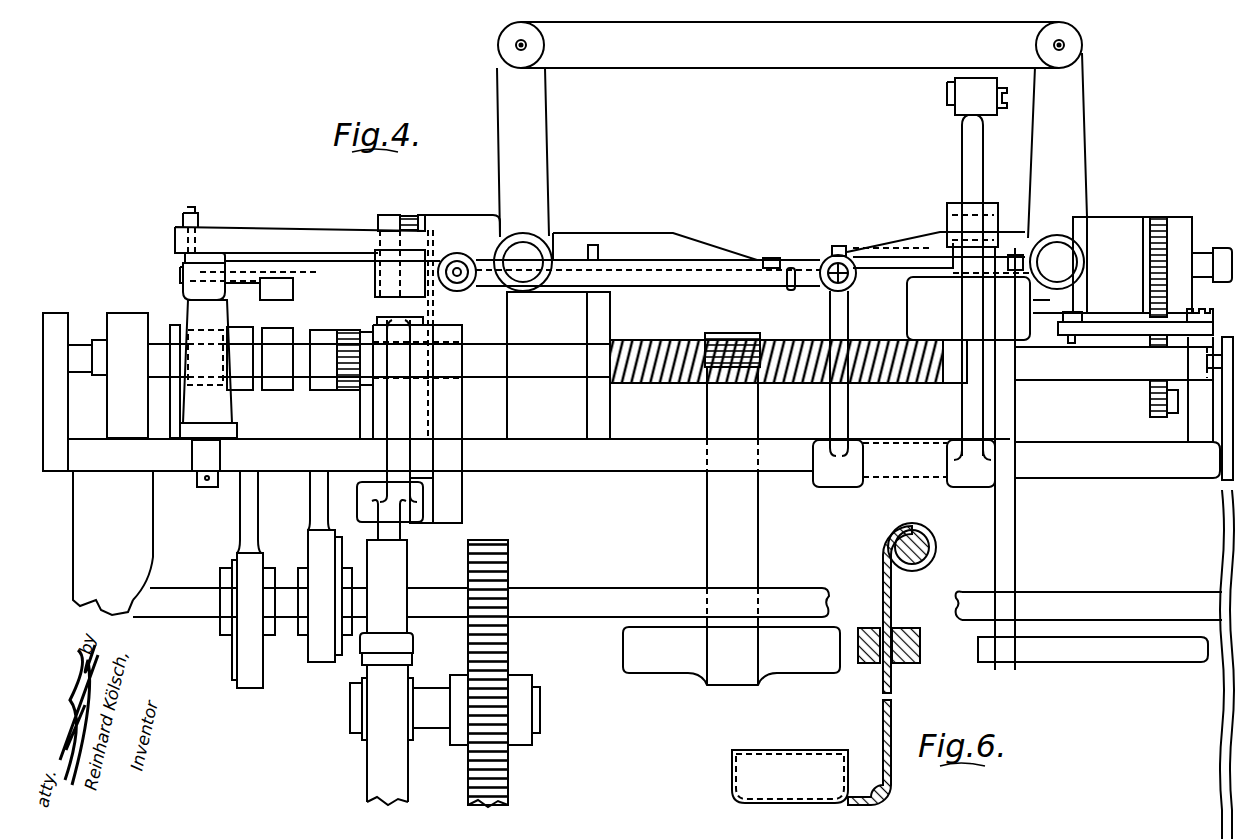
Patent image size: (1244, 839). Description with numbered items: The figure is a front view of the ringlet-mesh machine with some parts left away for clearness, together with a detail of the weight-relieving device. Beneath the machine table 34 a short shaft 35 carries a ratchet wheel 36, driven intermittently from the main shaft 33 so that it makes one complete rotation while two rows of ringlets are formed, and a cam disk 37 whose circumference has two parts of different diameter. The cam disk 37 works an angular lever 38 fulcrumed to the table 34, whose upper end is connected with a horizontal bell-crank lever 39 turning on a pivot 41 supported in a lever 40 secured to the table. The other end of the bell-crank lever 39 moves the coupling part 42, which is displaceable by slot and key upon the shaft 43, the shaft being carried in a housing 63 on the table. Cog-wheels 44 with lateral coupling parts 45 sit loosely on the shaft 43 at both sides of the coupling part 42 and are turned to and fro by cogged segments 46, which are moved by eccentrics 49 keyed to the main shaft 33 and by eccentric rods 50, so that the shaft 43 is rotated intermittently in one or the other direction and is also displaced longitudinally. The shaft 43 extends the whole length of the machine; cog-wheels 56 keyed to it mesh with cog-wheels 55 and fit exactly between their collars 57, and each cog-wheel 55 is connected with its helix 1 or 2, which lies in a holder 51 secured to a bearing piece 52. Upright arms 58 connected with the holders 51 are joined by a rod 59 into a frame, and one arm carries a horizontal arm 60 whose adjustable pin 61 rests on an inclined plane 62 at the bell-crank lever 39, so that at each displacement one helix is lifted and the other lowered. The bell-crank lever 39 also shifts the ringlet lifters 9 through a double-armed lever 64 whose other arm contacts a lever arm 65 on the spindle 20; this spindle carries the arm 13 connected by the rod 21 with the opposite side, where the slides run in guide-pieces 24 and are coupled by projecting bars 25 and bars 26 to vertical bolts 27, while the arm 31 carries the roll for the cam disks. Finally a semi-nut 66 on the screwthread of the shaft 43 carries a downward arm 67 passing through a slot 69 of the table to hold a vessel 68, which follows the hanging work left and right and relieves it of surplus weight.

In FIG. 4, the helix 1 is at (768, 262).
In FIG. 4, the helix 2 is at (832, 260).
In FIG. 4, the ringlet lifter 9 is at (789, 291).
In FIG. 4, the arm 13 is at (972, 406).
In FIG. 4, the spindle 20 is at (875, 485).
In FIG. 4, the rod 21 is at (951, 106).
In FIG. 4, the guide-piece 24 is at (907, 305).
In FIG. 4, the laterally projecting bar 25 is at (1087, 300).
In FIG. 4, the bar 26 is at (1110, 337).
In FIG. 4, the vertical bolt 27 is at (1190, 430).
In FIG. 4, the arm 31 is at (242, 290).
In FIG. 4, the main shaft 33 is at (186, 615).
In FIG. 4, the machine table 34 is at (672, 471).
In FIG. 6, the machine table 34 is at (920, 650).
In FIG. 4, the short shaft 35 is at (423, 688).
In FIG. 4, the ratchet wheel 36 is at (500, 652).
In FIG. 4, the cam disk 37 is at (372, 753).
In FIG. 4, the angular lever 38 is at (386, 568).
In FIG. 4, the bell-crank lever 39 is at (372, 288).
In FIG. 4, the lever 40 is at (186, 410).
In FIG. 4, the pivot 41 is at (195, 488).
In FIG. 4, the coupling part 42 is at (283, 340).
In FIG. 4, the shaft 43 is at (558, 374).
In FIG. 6, the shaft 43 is at (931, 566).
In FIG. 4, the cog-wheel 44 is at (322, 394).
In FIG. 4, the lateral coupling part 45 is at (303, 392).
In FIG. 4, the cogged segment 46 is at (348, 395).
In FIG. 4, the eccentric 49 is at (310, 653).
In FIG. 4, the eccentric rod 50 is at (310, 498).
In FIG. 4, the holder 51 is at (706, 252).
In FIG. 4, the bearing piece 52 is at (507, 290).
In FIG. 4, the cog-wheel 55 is at (410, 214).
In FIG. 4, the cog-wheel 56 is at (1185, 310).
In FIG. 4, the collar 57 is at (390, 214).
In FIG. 4, the upright arm 58 is at (545, 172).
In FIG. 4, the rod 59 is at (730, 66).
In FIG. 4, the horizontal arm 60 is at (316, 219).
In FIG. 4, the pin 61 is at (199, 222).
In FIG. 4, the inclined plane 62 is at (182, 272).
In FIG. 4, the housing 63 is at (605, 320).
In FIG. 4, the double-armed lever 64 is at (716, 290).
In FIG. 4, the lever arm 65 is at (830, 397).
In FIG. 4, the semi-nut 66 is at (735, 338).
In FIG. 6, the semi-nut 66 is at (932, 536).
In FIG. 4, the arm 67 is at (752, 547).
In FIG. 6, the arm 67 is at (880, 718).
In FIG. 4, the vessel 68 is at (650, 670).
In FIG. 6, the vessel 68 is at (732, 757).
In FIG. 6, the slot 69 is at (893, 668).